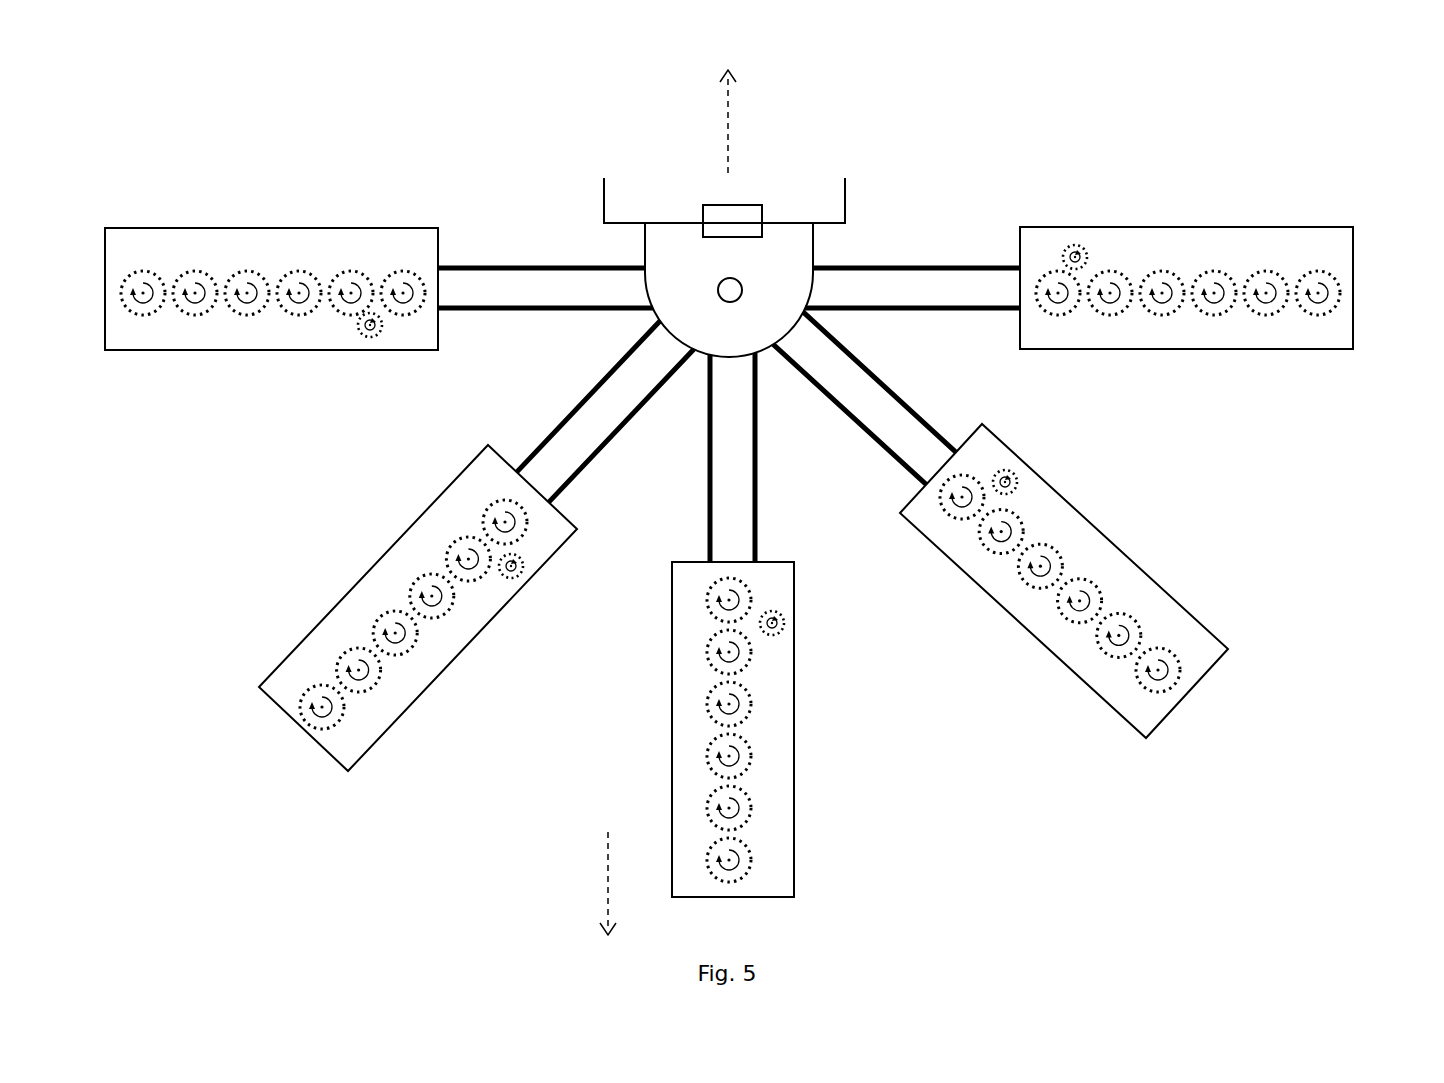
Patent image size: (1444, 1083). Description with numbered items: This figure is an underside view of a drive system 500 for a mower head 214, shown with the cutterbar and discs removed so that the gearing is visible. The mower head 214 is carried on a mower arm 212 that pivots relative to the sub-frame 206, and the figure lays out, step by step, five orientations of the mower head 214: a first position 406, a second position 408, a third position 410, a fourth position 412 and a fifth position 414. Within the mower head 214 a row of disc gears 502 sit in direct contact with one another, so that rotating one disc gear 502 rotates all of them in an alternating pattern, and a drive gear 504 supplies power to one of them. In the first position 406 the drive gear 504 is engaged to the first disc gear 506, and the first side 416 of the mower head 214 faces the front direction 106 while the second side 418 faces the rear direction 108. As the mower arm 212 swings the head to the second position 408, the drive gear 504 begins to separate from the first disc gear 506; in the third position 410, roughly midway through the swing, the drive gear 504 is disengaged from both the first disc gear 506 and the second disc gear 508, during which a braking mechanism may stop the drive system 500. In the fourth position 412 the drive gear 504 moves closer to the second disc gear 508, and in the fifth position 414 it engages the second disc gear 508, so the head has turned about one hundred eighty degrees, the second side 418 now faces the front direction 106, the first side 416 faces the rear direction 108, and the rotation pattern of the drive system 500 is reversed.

The drive system 500 is at (150, 158).
The front direction 106 is at (728, 128).
The rear direction 108 is at (608, 877).
The sub-frame 206 is at (693, 258).
The mower arm 212 is at (880, 293).
The mower head 214 is at (1353, 250).
The first position 406 is at (1260, 200).
The second position 408 is at (1121, 520).
The third position 410 is at (818, 748).
The fourth position 412 is at (490, 663).
The fifth position 414 is at (260, 372).
The first side 416 is at (207, 352).
The second side 418 is at (297, 228).
The disc gear 502 is at (1318, 316).
The drive gear 504 is at (370, 337).
The first disc gear 506 is at (410, 314).
The second disc gear 508 is at (334, 310).